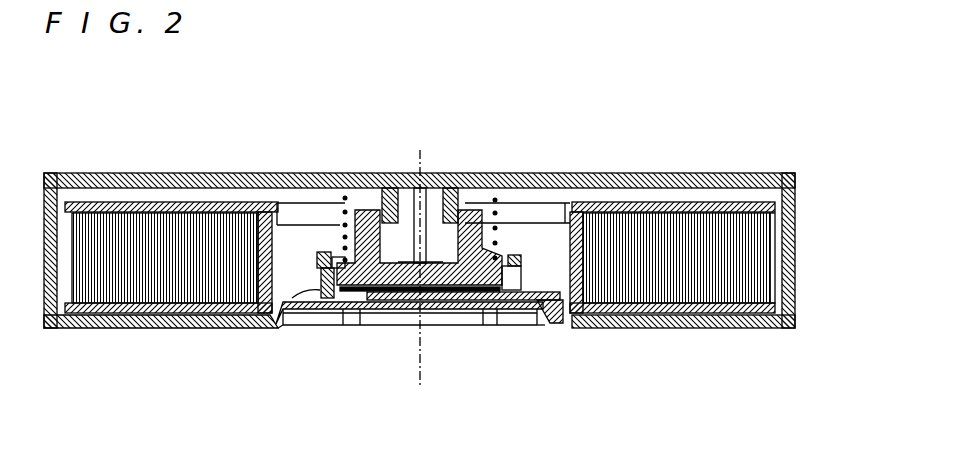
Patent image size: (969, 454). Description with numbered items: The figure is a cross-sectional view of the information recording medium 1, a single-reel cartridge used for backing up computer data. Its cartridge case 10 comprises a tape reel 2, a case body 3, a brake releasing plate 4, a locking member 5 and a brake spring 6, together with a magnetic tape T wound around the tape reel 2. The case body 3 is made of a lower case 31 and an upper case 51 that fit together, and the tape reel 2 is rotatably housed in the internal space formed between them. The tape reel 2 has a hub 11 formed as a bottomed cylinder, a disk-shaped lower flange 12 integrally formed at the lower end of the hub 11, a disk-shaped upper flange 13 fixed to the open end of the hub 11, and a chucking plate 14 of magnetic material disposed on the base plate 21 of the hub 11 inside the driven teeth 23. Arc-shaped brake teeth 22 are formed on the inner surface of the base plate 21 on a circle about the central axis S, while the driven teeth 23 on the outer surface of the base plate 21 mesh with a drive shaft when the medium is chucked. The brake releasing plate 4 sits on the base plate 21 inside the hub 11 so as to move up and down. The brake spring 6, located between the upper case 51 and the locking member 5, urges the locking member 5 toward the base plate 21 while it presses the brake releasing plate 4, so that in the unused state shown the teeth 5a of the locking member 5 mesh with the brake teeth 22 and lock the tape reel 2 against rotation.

The information recording medium 1 is at (414, 103).
The tape reel 2 is at (614, 188).
The case body 3 is at (814, 251).
The brake releasing plate 4 is at (555, 326).
The locking member 5 is at (350, 230).
The teeth 5a is at (311, 270).
The brake spring 6 is at (358, 175).
The cartridge case 10 is at (711, 156).
The hub 11 is at (574, 203).
The lower flange 12 is at (700, 329).
The upper flange 13 is at (680, 202).
The chucking plate 14 is at (392, 292).
The base plate 21 is at (370, 327).
The brake teeth 22 is at (279, 328).
The driven teeth 23 is at (294, 338).
The lower case 31 is at (796, 290).
The upper case 51 is at (796, 217).
The axis S is at (421, 378).
The magnetic tape T is at (165, 329).